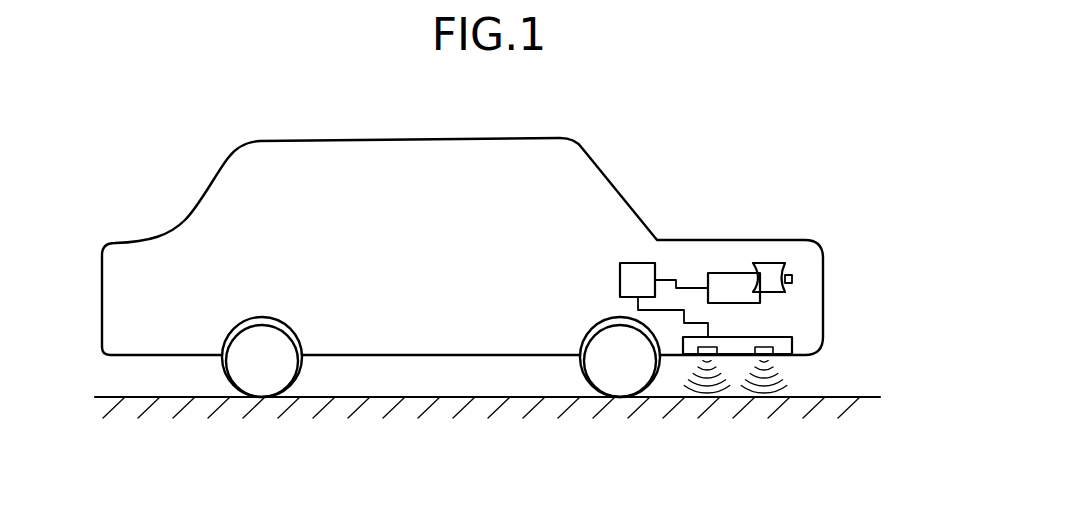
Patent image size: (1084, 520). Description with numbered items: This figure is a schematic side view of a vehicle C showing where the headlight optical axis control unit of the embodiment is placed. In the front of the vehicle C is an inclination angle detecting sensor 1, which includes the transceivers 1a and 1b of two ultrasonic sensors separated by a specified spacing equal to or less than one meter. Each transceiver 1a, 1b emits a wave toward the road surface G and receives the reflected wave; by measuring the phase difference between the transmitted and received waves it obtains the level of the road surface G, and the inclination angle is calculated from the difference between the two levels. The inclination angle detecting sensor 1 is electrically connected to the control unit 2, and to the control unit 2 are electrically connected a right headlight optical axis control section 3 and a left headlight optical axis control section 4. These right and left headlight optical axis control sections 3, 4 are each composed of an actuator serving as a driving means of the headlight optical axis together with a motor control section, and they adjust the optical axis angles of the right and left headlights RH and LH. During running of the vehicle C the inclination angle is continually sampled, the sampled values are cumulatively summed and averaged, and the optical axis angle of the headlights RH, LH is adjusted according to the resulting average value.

The vehicle C is at (433, 137).
The road surface G is at (375, 398).
The inclination angle detecting sensor 1 is at (790, 337).
The transceiver of ultrasonic sensor 1a is at (766, 357).
The transceiver of ultrasonic sensor 1b is at (705, 357).
The control unit 2 is at (632, 263).
The right headlight optical axis control section 3 is at (732, 245).
The left headlight optical axis control section 4 is at (727, 273).
The right headlight RH is at (777, 225).
The left headlight LH is at (775, 263).